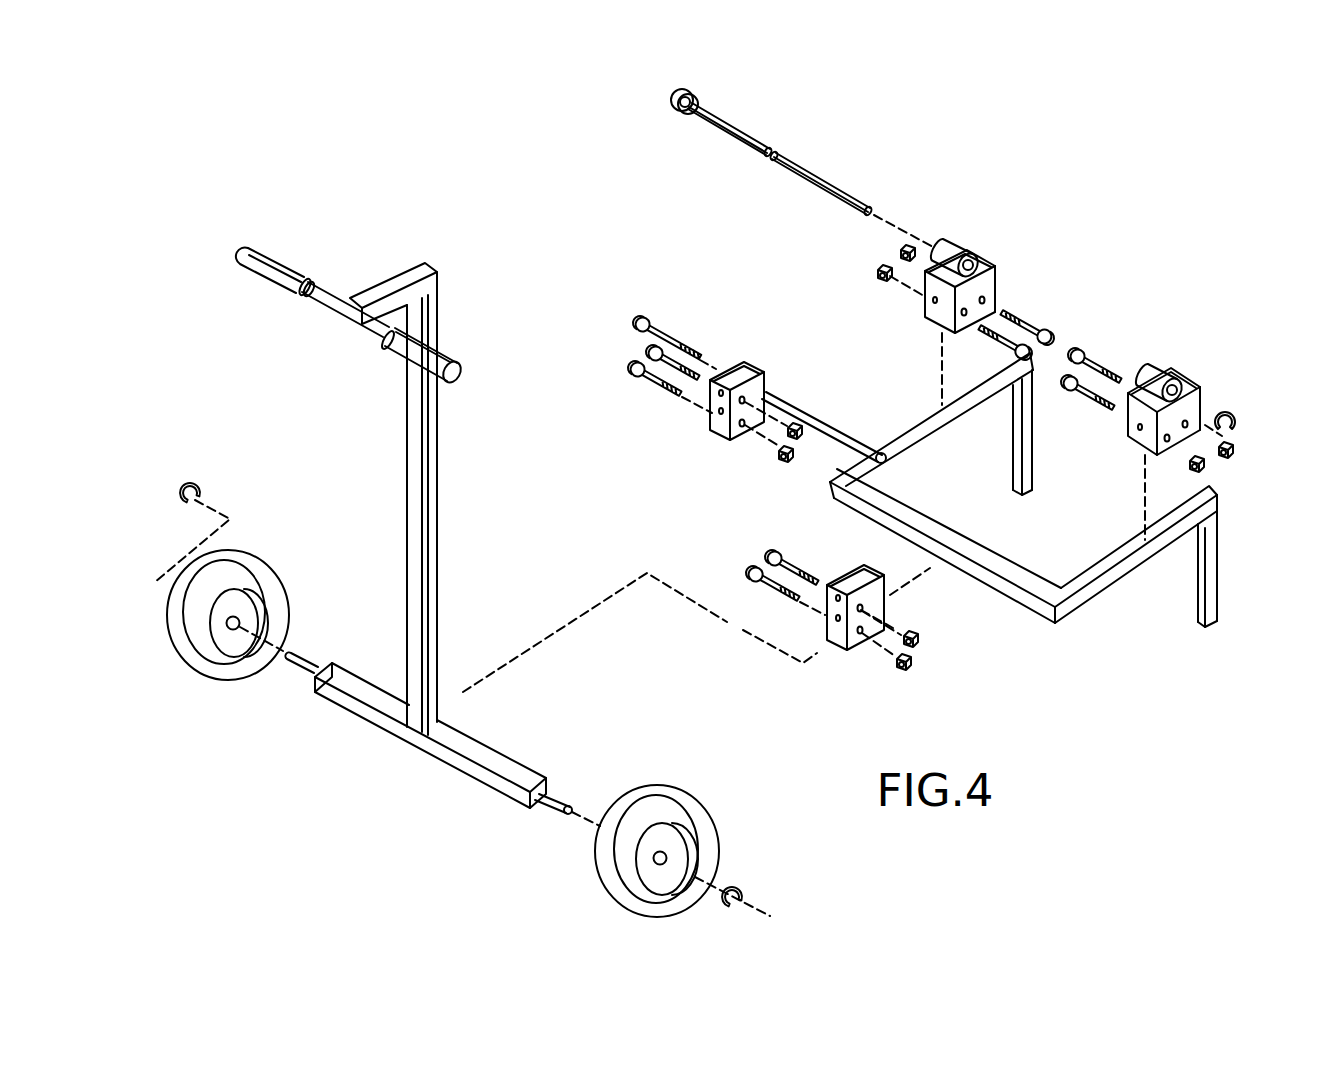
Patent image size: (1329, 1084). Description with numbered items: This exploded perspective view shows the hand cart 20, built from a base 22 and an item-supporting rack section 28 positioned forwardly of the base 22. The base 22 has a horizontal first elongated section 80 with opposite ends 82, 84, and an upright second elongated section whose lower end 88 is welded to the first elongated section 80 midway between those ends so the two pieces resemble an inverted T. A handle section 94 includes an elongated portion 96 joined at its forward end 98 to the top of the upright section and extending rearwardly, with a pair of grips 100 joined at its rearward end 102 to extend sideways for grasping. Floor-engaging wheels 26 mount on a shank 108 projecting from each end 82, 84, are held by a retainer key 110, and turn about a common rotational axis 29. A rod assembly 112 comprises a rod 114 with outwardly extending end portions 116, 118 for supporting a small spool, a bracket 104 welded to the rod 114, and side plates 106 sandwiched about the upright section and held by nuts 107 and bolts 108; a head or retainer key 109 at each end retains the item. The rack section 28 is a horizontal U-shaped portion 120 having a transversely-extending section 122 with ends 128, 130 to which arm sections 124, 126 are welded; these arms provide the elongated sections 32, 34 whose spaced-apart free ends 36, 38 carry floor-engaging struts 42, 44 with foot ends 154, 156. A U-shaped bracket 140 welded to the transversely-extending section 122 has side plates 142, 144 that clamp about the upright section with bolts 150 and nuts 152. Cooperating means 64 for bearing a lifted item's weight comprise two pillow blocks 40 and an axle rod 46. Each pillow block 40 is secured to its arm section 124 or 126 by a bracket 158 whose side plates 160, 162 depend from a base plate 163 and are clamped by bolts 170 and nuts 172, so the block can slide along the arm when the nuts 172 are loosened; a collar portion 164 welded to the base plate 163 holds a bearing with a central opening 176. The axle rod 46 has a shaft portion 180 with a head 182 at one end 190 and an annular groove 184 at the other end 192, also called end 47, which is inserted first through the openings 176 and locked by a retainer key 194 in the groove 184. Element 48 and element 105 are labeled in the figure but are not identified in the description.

The hand cart 20 is at (1023, 435).
The base 22 is at (440, 755).
The floor-engaging wheels 26 is at (180, 650).
The item-supporting rack section 28 is at (1066, 616).
The common rotational axis 29 is at (182, 487).
The elongated section 32 is at (1140, 562).
The elongated section 34 is at (933, 412).
The spaced-apart end 36 is at (1215, 490).
The spaced-apart end 38 is at (1034, 372).
The pillow block 40 is at (1073, 288).
The floor-engaging strut 42 is at (1218, 548).
The floor-engaging strut 44 is at (1034, 452).
The axle rod 46 is at (776, 157).
The rod end 47 is at (863, 212).
The washer 48 is at (681, 108).
The cooperating means 64 is at (1249, 328).
The first elongated section 80 is at (478, 787).
The end 82 is at (520, 803).
The end 84 is at (322, 700).
The lower end 88 is at (438, 677).
The handle section 94 is at (334, 325).
The elongated portion 96 is at (376, 280).
The forward end 98 is at (427, 260).
The grips 100 is at (263, 283).
The rearward end 102 is at (350, 283).
The bracket 104 is at (752, 368).
The nut 105 is at (797, 420).
The side plates 106 is at (716, 430).
The nuts 107 is at (660, 305).
The bolts / shank 108 is at (293, 668).
The head or retainer key 109 is at (633, 320).
The retainer key 110 is at (200, 492).
The rod assembly 112 is at (873, 445).
The rod 114 is at (703, 353).
The end portion 116 is at (682, 332).
The end portion 118 is at (770, 420).
The U-shaped portion 120 is at (1040, 612).
The transversely-extending section 122 is at (1008, 597).
The arm section 124 is at (1085, 598).
The arm section 126 is at (963, 423).
The end 128 is at (1022, 566).
The end 130 is at (848, 500).
The bracket 140 is at (865, 648).
The side plate 142 is at (827, 633).
The side plate 144 is at (848, 650).
The bolts 150 is at (750, 572).
The nut 152 is at (897, 668).
The foot end 154 is at (1200, 628).
The foot end 156 is at (1028, 493).
The bracket 158 is at (998, 272).
The side plate 160 is at (942, 330).
The side plate 162 is at (924, 303).
The base plate 163 is at (981, 258).
The collar portion 164 is at (940, 246).
The bolts 170 is at (1080, 350).
The nut 172 is at (878, 272).
The central opening 176 is at (998, 287).
The shaft portion 180 is at (750, 146).
The head 182 is at (690, 112).
The annular groove 184 is at (858, 202).
The end 190 is at (710, 115).
The end 192 is at (878, 208).
The retainer key 194 is at (1234, 421).